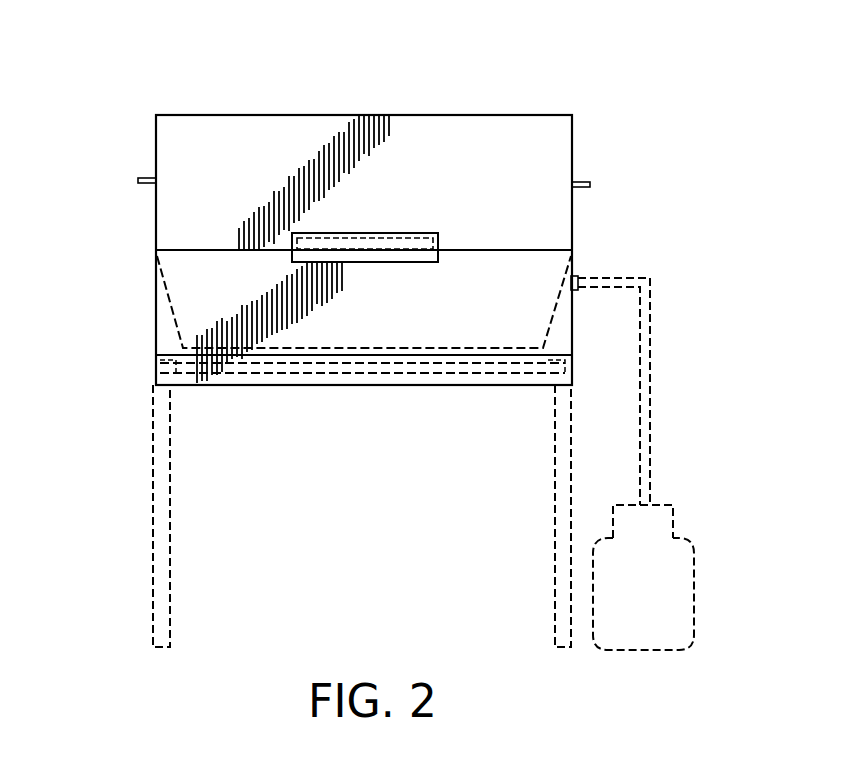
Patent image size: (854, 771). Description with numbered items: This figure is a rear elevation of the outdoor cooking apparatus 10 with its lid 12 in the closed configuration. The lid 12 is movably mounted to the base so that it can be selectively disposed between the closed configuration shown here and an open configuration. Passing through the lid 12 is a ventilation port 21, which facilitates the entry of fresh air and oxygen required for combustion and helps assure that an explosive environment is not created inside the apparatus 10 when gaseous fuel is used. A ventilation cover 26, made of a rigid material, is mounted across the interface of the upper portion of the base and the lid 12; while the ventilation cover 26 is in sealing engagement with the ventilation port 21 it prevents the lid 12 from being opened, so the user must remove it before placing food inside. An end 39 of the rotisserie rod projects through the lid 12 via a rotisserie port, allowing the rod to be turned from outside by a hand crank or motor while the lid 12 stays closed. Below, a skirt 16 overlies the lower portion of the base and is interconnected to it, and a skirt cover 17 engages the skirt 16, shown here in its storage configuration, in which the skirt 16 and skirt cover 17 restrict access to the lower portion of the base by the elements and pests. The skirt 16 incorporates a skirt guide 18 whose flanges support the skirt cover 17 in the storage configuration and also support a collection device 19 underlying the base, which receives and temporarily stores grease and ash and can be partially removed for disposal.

The outdoor cooking apparatus 10 is at (193, 80).
The lid 12 is at (156, 137).
The end of rotisserie rod 39 is at (140, 180).
The ventilation port 21 is at (383, 235).
The ventilation cover 26 is at (435, 235).
The skirt 16 is at (155, 320).
The collection device 19 is at (323, 373).
The skirt guide 18 is at (160, 392).
The skirt cover 17 is at (573, 322).